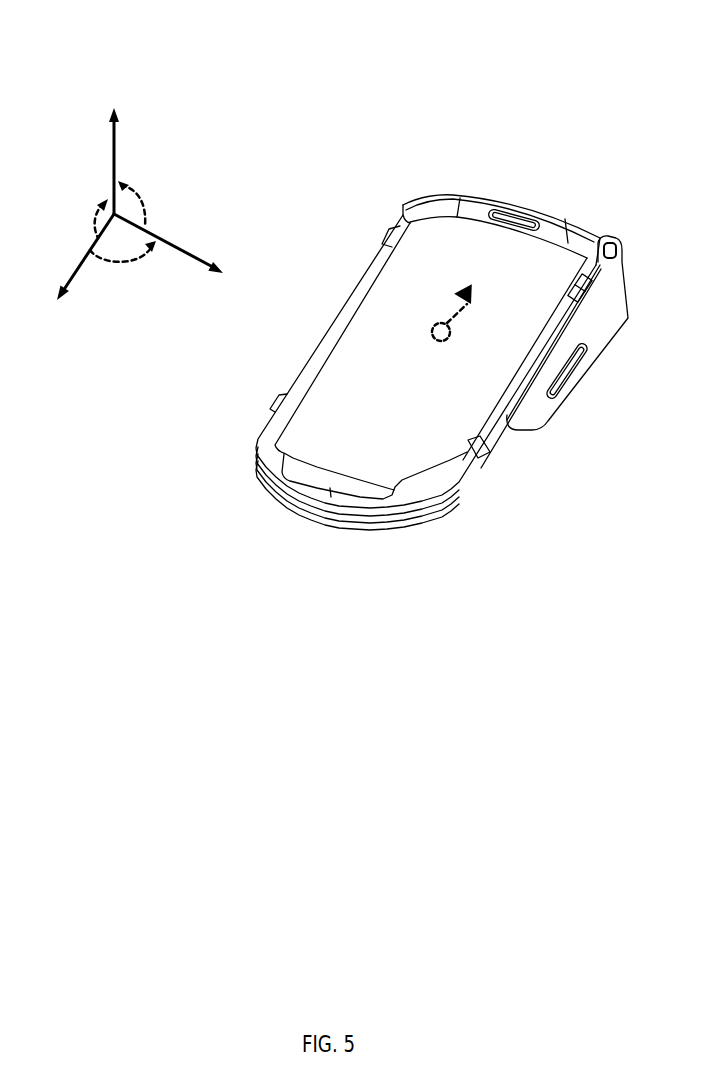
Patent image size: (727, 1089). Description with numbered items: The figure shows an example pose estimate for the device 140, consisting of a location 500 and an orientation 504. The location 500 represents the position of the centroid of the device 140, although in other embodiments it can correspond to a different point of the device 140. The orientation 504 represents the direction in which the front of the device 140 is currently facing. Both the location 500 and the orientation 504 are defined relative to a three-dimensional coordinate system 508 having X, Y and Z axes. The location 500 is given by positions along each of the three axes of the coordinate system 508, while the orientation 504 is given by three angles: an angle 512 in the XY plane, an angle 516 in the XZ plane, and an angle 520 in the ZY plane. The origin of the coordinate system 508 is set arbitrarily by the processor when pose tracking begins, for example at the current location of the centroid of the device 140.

The device 140 is at (577, 194).
The location 500 is at (432, 332).
The orientation 504 is at (463, 289).
The three-dimensional coordinate system 508 is at (100, 88).
The angle in the XY plane 512 is at (152, 203).
The angle in the XZ plane 516 is at (123, 268).
The angle in the ZY plane 520 is at (80, 218).